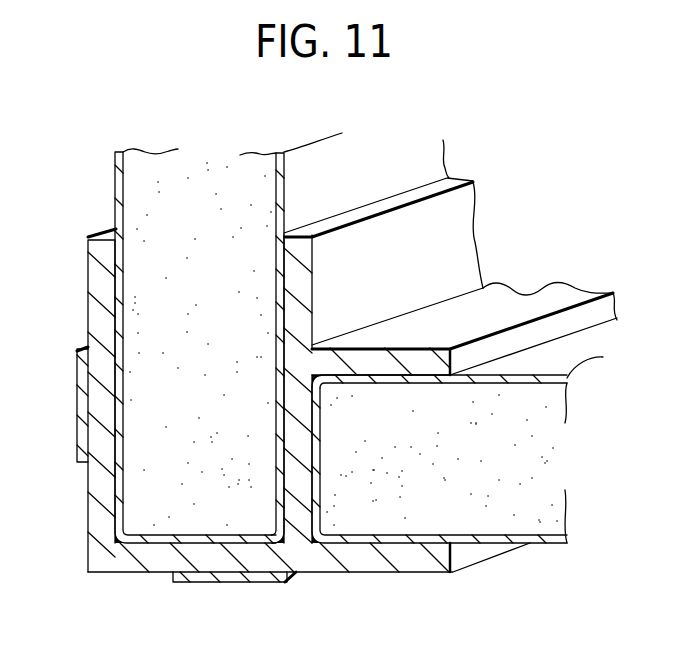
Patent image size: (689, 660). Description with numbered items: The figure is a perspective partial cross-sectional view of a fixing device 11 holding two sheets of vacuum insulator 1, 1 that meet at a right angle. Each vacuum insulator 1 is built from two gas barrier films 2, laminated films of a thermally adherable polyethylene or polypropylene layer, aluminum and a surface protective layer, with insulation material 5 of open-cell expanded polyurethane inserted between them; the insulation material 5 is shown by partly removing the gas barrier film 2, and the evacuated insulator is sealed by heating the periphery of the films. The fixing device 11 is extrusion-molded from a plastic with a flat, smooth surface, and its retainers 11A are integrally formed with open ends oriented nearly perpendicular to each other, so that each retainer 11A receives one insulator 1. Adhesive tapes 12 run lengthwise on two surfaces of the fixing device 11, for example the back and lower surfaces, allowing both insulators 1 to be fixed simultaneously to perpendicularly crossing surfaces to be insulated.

The vacuum insulator 1 is at (114, 172).
The gas barrier film 2 is at (285, 190).
The insulation material 5 is at (199, 196).
The fixing device 11 is at (88, 508).
The retainer 11A is at (117, 321).
The adhesive tape 12 is at (77, 386).